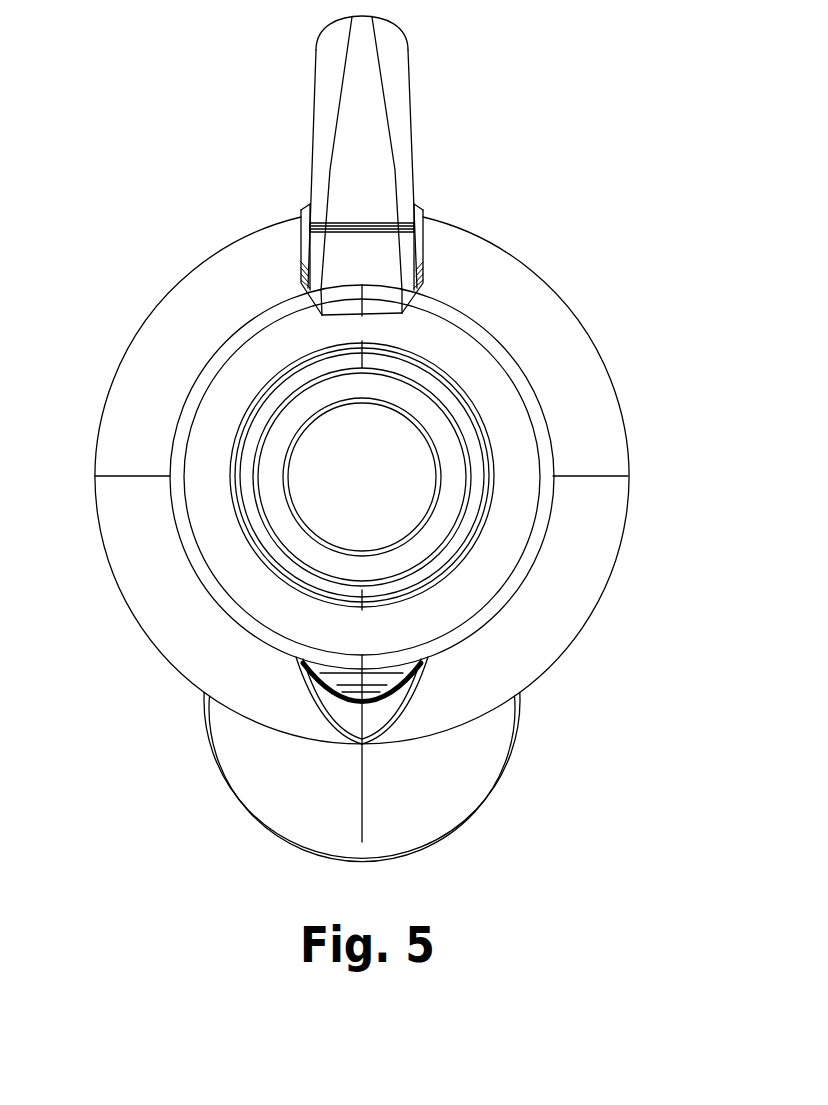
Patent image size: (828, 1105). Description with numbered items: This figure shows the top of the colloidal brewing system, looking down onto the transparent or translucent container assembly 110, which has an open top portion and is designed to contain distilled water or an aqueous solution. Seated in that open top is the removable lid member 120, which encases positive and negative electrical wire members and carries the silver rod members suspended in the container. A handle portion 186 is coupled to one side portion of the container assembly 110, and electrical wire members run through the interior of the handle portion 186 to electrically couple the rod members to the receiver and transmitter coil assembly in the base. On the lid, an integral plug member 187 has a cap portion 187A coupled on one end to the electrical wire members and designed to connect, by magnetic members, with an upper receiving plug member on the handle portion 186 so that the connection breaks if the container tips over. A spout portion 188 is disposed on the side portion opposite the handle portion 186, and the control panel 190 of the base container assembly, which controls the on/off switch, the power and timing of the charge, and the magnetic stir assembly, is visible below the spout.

The container assembly 110 is at (620, 555).
The lid member 120 is at (223, 540).
The handle portion 186 is at (408, 108).
The integral plug member 187 is at (432, 238).
The cap portion 187A is at (340, 262).
The spout portion 188 is at (340, 712).
The control panel 190 is at (463, 775).